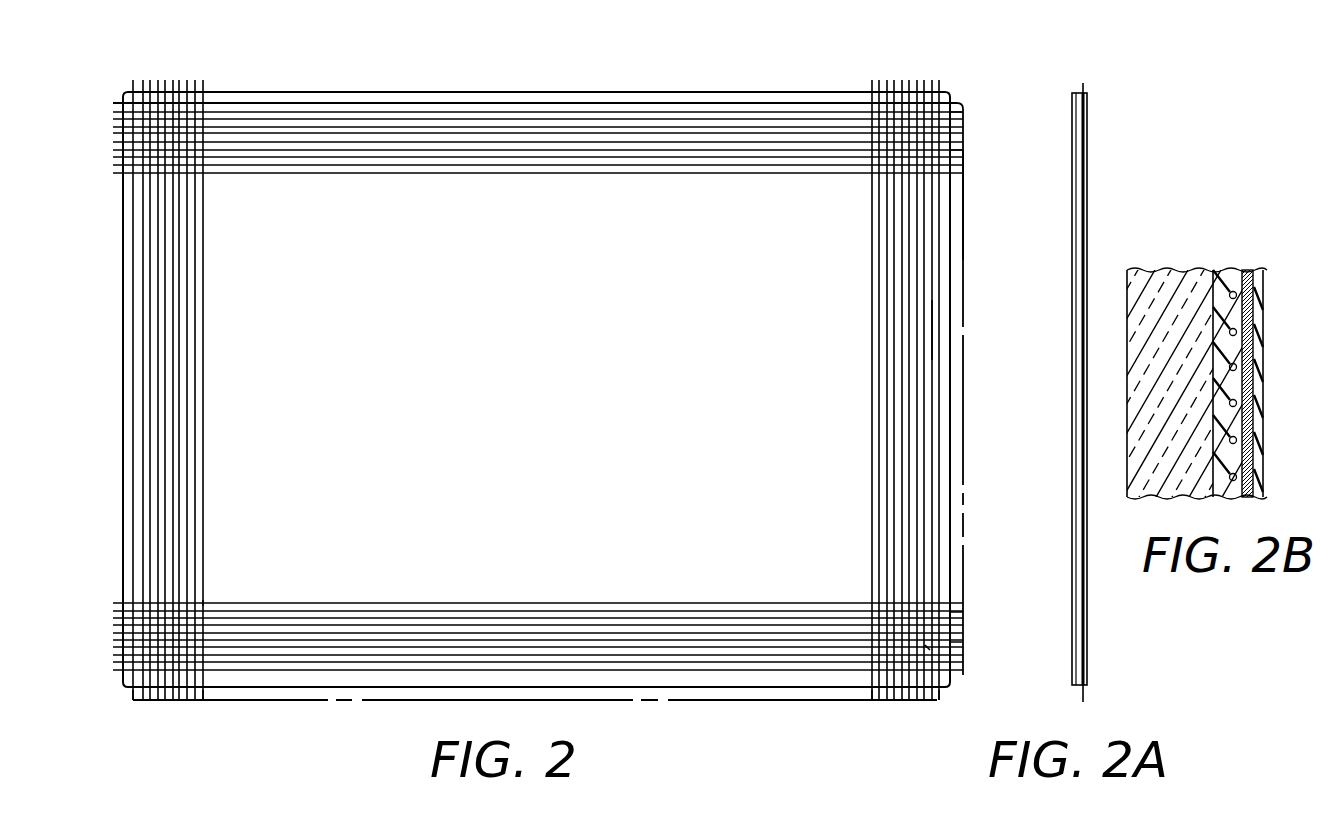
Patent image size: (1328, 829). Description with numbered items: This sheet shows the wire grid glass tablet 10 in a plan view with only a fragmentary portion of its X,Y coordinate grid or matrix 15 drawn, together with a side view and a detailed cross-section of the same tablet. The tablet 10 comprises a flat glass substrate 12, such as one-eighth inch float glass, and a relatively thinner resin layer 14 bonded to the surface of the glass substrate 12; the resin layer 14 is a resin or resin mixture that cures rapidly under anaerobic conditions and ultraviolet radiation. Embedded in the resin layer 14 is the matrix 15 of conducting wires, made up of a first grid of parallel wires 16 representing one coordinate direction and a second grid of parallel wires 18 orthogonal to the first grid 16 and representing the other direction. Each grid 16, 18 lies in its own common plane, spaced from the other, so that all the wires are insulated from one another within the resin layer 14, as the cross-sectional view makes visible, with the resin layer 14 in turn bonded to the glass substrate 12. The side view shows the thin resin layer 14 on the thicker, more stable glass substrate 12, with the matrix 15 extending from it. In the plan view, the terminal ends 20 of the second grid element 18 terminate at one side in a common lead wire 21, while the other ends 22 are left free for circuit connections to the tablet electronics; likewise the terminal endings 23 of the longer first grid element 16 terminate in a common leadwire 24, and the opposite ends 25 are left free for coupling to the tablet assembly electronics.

In FIG. 2, the wire grid glass tablet 10 is at (539, 387).
In FIG. 2, the glass substrate 12 is at (952, 400).
In FIG. 2A, the glass substrate 12 is at (1085, 133).
In FIG. 2B, the glass substrate 12 is at (1128, 452).
In FIG. 2, the resin layer 14 is at (569, 424).
In FIG. 2A, the resin layer 14 is at (1085, 200).
In FIG. 2B, the resin layer 14 is at (1258, 338).
In FIG. 2, the X,Y coordinate grid or matrix 15 is at (208, 600).
In FIG. 2A, the X,Y coordinate grid or matrix 15 is at (1092, 88).
In FIG. 2, the first grid of parallel wires 16 is at (763, 674).
In FIG. 2B, the first grid of parallel wires 16 is at (1238, 292).
In FIG. 2, the second grid of parallel wires 18 is at (932, 330).
In FIG. 2B, the second grid of parallel wires 18 is at (1248, 272).
In FIG. 2, the terminal ends 20 is at (150, 704).
In FIG. 2, the common lead wire 21 is at (277, 703).
In FIG. 2, the other ends 22 is at (165, 80).
In FIG. 2, the terminal endings 23 is at (965, 127).
In FIG. 2, the common leadwire 24 is at (965, 205).
In FIG. 2, the opposite ends 25 is at (115, 135).